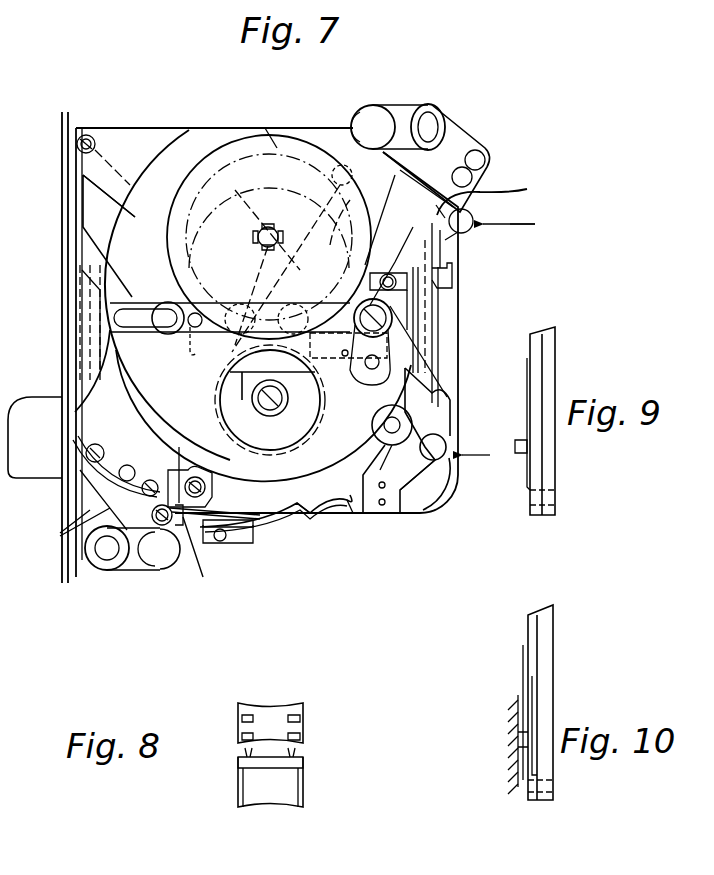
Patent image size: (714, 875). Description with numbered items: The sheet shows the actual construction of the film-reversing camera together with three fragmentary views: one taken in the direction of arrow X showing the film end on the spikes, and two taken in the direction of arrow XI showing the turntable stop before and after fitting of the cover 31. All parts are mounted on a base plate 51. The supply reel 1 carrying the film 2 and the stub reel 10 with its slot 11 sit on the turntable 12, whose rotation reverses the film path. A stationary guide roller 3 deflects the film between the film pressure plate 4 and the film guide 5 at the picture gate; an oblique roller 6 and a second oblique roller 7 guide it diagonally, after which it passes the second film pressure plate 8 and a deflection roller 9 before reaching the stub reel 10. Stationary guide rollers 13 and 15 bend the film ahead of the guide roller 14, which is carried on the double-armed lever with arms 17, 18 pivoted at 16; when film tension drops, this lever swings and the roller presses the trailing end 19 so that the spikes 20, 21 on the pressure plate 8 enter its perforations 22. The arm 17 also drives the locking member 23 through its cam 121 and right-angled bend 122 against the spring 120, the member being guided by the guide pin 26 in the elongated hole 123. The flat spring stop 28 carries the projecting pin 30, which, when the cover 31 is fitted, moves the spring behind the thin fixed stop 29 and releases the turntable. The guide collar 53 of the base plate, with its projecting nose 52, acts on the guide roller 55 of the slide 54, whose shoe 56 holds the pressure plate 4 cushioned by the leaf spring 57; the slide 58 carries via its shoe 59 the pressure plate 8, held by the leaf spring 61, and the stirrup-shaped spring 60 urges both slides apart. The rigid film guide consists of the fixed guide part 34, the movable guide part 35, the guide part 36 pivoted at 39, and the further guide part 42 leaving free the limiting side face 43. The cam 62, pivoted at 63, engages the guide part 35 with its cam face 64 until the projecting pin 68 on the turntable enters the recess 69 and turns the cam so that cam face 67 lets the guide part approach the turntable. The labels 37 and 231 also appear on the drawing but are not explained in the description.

In FIG. 7, the supply reel 1 is at (175, 235).
In FIG. 7, the film 2 is at (452, 138).
In FIG. 7, the stationary guide roller 3 is at (88, 135).
In FIG. 7, the film pressure plate 4 is at (108, 272).
In FIG. 7, the film guide 5 is at (62, 125).
In FIG. 7, the oblique roller 6 is at (103, 570).
In FIG. 7, the second oblique roller 7 is at (398, 112).
In FIG. 7, the second film pressure plate 8 is at (440, 397).
In FIG. 8, the second film pressure plate 8 is at (265, 790).
In FIG. 7, the deflection roller 9 is at (395, 470).
In FIG. 7, the stub reel 10 is at (225, 400).
In FIG. 7, the slot 11 is at (262, 395).
In FIG. 7, the turntable 12 is at (186, 135).
In FIG. 7, the stationary guide roller 13 is at (465, 178).
In FIG. 7, the guide roller 14 is at (462, 222).
In FIG. 7, the stationary guide roller 15 is at (478, 158).
In FIG. 7, the pivot 16 is at (393, 314).
In FIG. 7, the lever arm 17 is at (445, 240).
In FIG. 7, the lever arm 18 is at (300, 375).
In FIG. 7, the trailing end of the film 19 is at (438, 205).
In FIG. 8, the trailing end of the film 19 is at (268, 720).
In FIG. 8, the spike 20 is at (240, 758).
In FIG. 8, the spike 21 is at (300, 760).
In FIG. 8, the perforations 22 is at (240, 736).
In FIG. 7, the locking member 23 is at (452, 279).
In FIG. 7, the guide pin 26 is at (388, 274).
In FIG. 7, the flat spring stop 28 is at (408, 463).
In FIG. 9, the flat spring stop 28 is at (527, 470).
In FIG. 10, the flat spring stop 28 is at (532, 780).
In FIG. 10, the fixed stop 29 is at (520, 737).
In FIG. 7, the projecting pin 30 is at (440, 452).
In FIG. 9, the projecting pin 30 is at (518, 440).
In FIG. 10, the projecting pin 30 is at (514, 758).
In FIG. 10, the cover 31 is at (524, 718).
In FIG. 7, the guide part 34 is at (92, 478).
In FIG. 7, the guide part 35 is at (250, 543).
In FIG. 7, the guide part 36 is at (275, 530).
In FIG. 7, the roller 37 is at (150, 570).
In FIG. 7, the pivot 39 is at (220, 541).
In FIG. 7, the further guide part 42 is at (328, 513).
In FIG. 7, the limiting side face 43 is at (300, 508).
In FIG. 7, the base plate 51 is at (226, 128).
In FIG. 7, the projecting nose 52 is at (110, 278).
In FIG. 7, the guide collar 53 is at (205, 212).
In FIG. 7, the slide 54 is at (145, 332).
In FIG. 7, the guide roller 55 is at (96, 371).
In FIG. 7, the shoe 56 is at (78, 288).
In FIG. 7, the leaf spring 57 is at (90, 325).
In FIG. 7, the slide 58 is at (348, 346).
In FIG. 7, the shoe 59 is at (415, 360).
In FIG. 7, the stirrup-shaped spring 60 is at (226, 306).
In FIG. 7, the leaf spring 61 is at (420, 322).
In FIG. 7, the cam 62 is at (168, 470).
In FIG. 7, the pivot 63 is at (205, 578).
In FIG. 7, the cam face 64 is at (170, 525).
In FIG. 7, the cam face 67 is at (212, 497).
In FIG. 7, the projecting pin 68 is at (341, 165).
In FIG. 7, the recess 69 is at (200, 475).
In FIG. 7, the spring 120 is at (340, 302).
In FIG. 7, the cam 121 is at (355, 280).
In FIG. 7, the right-angled bend 122 is at (393, 215).
In FIG. 7, the elongated hole 123 is at (413, 225).
In FIG. 7, the link 231 is at (372, 362).